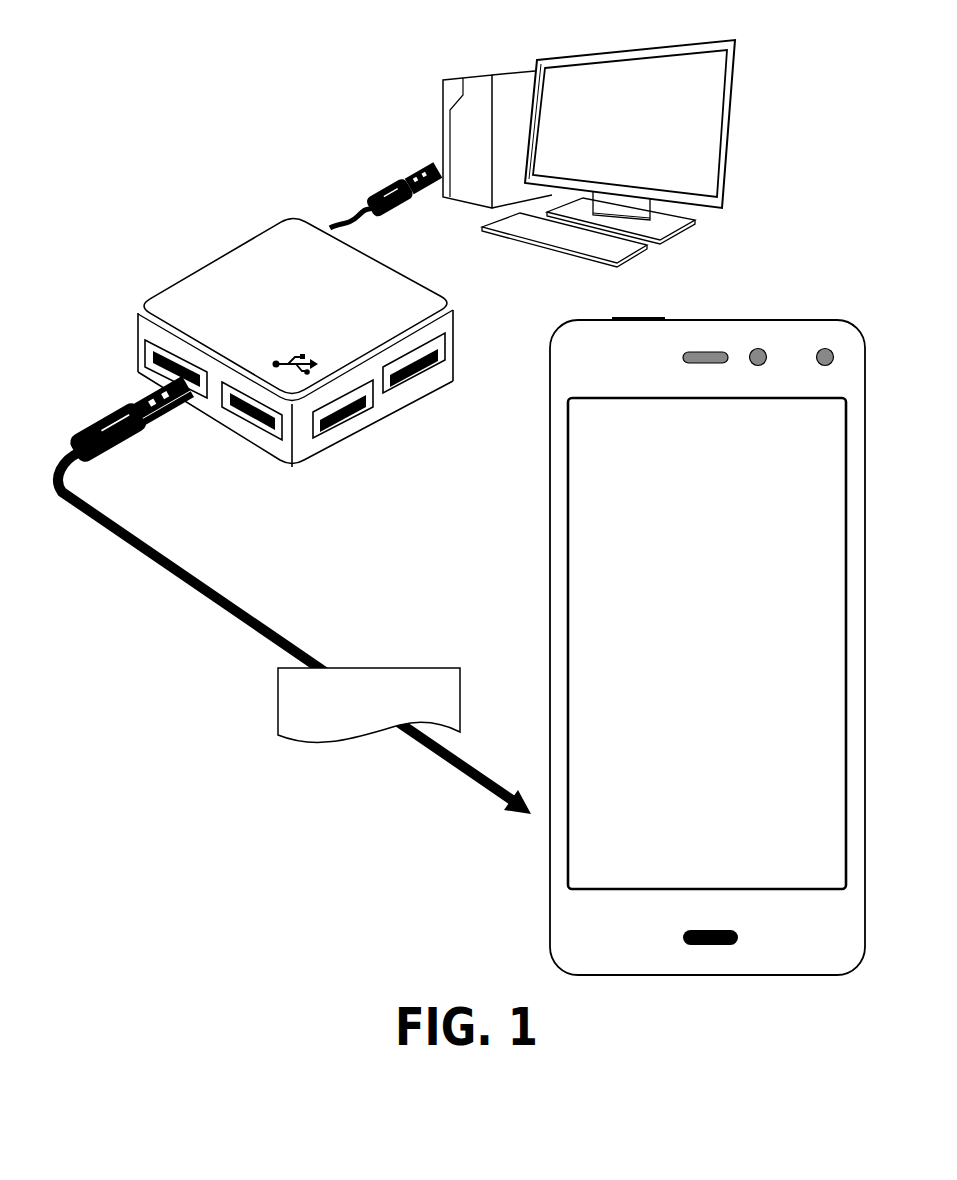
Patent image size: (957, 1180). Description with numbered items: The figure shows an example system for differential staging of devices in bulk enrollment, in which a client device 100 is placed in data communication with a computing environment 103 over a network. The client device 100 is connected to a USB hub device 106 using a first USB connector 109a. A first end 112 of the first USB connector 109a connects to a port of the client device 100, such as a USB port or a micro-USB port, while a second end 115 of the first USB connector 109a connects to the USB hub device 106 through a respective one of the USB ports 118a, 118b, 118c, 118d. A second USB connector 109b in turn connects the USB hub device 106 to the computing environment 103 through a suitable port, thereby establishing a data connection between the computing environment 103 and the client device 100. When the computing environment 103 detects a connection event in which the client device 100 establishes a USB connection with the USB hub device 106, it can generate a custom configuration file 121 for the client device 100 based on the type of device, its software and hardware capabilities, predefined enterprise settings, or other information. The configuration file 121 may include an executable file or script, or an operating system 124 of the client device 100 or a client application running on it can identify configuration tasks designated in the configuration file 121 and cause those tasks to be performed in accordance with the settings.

The client device 100 is at (813, 320).
The computing environment 103 is at (502, 55).
The USB hub device 106 is at (295, 342).
The first USB connector 109a is at (273, 633).
The second USB connector 109b is at (335, 215).
The first end 112 is at (507, 770).
The second end 115 is at (57, 417).
The USB port 118a is at (147, 352).
The USB port 118b is at (248, 423).
The USB port 118c is at (343, 423).
The USB port 118d is at (420, 377).
The configuration file 121 is at (369, 705).
The operating system 124 is at (706, 646).